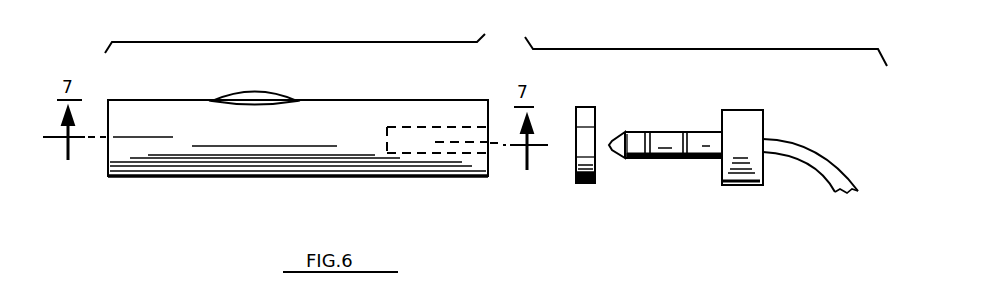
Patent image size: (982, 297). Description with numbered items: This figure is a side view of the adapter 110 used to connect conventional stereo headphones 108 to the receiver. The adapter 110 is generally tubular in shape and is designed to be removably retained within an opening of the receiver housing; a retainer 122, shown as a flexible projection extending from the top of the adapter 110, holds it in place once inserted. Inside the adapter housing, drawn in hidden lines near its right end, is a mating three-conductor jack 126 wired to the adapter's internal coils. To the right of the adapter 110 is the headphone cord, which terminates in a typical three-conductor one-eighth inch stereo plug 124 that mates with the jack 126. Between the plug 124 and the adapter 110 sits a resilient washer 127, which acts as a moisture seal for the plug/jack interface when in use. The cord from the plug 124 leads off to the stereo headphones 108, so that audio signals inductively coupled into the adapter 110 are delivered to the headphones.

The adapter 110 is at (233, 178).
The retainer 122 is at (241, 91).
The three-conductor jack 126 is at (462, 128).
The resilient washer 127 is at (580, 183).
The stereo plug 124 is at (742, 186).
The stereo headphones 108 is at (870, 223).